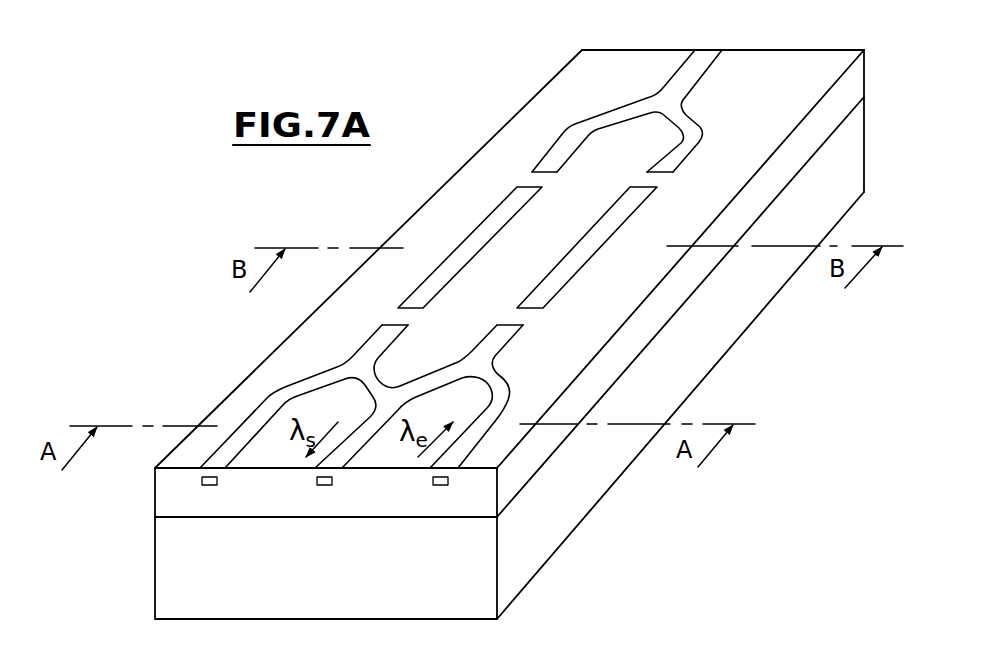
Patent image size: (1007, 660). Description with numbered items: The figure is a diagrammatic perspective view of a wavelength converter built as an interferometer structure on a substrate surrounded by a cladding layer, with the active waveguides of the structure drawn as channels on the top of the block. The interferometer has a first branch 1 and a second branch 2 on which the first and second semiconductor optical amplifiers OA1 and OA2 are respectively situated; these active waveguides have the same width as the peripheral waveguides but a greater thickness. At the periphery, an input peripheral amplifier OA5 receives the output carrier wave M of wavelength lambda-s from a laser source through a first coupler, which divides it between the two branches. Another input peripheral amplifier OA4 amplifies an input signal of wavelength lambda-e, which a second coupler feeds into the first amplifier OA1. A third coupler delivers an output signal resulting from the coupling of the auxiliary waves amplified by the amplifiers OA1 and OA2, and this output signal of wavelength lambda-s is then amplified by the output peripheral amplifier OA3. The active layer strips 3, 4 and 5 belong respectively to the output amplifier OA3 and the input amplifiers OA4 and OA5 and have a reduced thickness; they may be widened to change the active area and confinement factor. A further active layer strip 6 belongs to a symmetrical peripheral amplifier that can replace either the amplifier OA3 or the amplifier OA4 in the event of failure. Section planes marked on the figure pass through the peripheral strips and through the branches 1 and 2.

The first branch 1 is at (587, 247).
The second branch 2 is at (470, 247).
The active layer strip 3 is at (417, 422).
The active layer strip 4 is at (490, 396).
The active layer strip 5 is at (627, 111).
The active layer strip 6 is at (291, 396).
The first amplifier OA1 is at (642, 205).
The second amplifier OA2 is at (435, 266).
The output peripheral semiconductor optical amplifier OA3 is at (395, 378).
The input peripheral semiconductor optical amplifier OA4 is at (512, 377).
The input peripheral semiconductor optical amplifier OA5 is at (700, 82).
The output carrier wave M is at (724, 35).